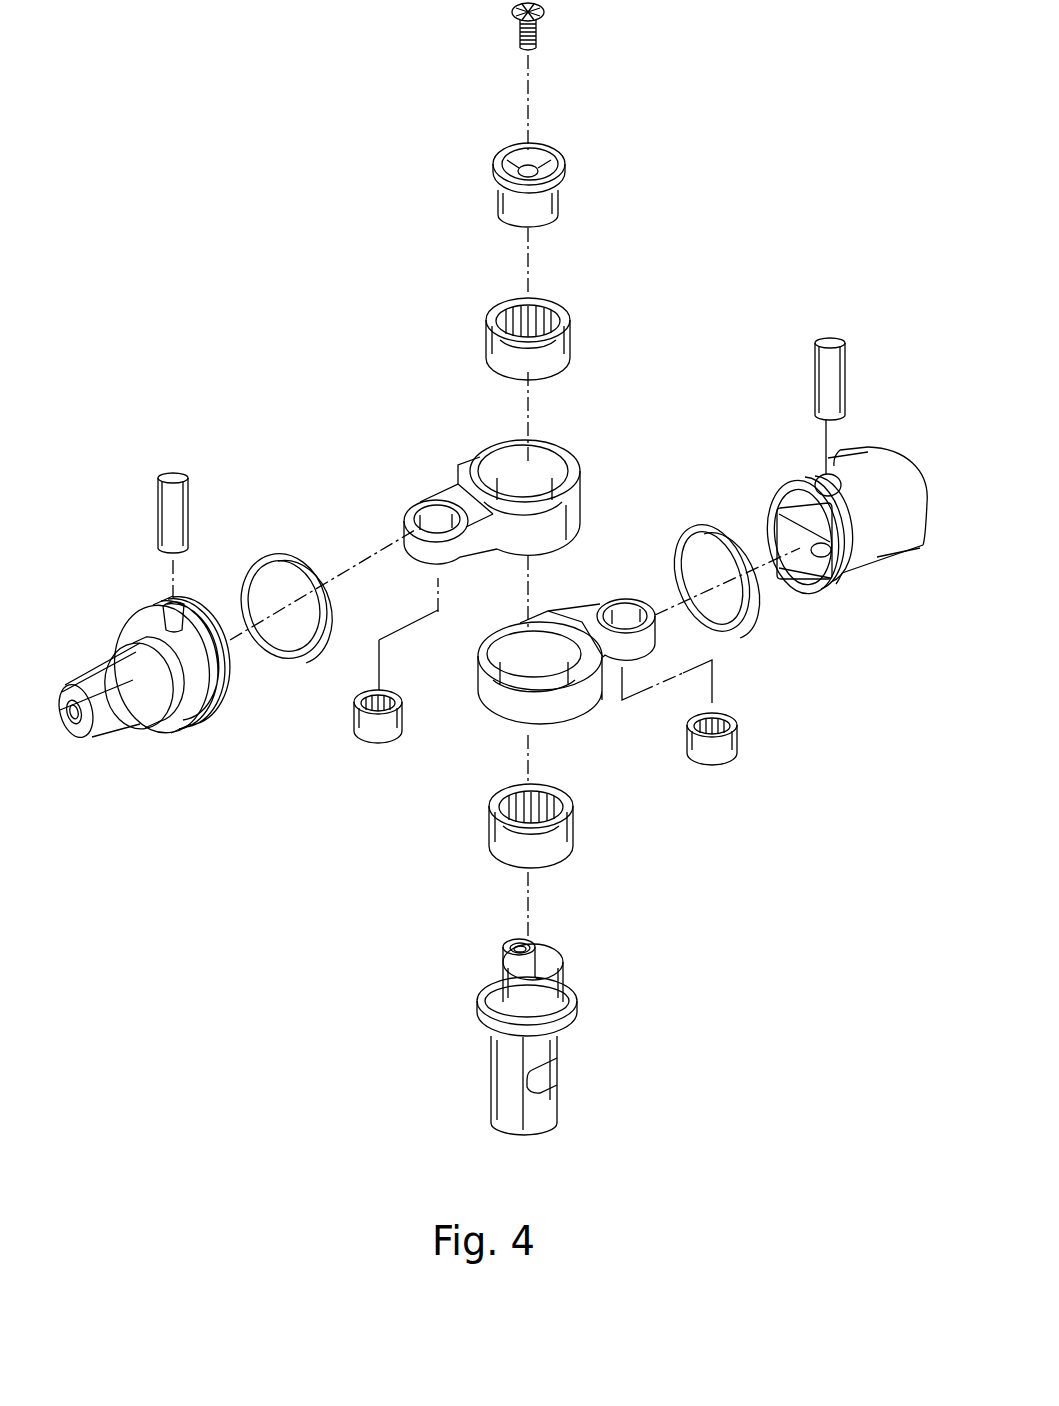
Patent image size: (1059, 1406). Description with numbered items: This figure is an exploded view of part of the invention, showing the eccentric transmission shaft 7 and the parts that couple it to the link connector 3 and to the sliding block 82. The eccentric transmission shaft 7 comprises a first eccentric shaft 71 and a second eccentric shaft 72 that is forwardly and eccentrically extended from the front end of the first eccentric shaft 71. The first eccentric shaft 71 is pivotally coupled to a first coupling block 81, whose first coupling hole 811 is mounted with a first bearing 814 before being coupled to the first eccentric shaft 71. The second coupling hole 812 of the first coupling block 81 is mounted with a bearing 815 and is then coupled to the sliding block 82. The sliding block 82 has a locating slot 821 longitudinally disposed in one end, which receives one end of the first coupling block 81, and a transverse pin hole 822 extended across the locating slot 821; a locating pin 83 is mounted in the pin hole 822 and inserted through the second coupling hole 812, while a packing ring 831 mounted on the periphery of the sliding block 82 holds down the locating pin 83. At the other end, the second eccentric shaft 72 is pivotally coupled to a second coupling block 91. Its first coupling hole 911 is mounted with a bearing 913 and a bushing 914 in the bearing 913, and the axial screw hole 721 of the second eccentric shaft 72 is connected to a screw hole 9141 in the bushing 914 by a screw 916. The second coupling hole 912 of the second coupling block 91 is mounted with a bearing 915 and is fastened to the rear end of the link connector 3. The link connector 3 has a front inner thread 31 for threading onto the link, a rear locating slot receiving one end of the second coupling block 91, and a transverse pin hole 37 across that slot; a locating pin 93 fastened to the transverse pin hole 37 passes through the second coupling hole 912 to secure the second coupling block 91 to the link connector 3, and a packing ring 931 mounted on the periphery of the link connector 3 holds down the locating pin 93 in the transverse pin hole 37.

The screw 916 is at (518, 30).
The screw hole 9141 is at (519, 168).
The bushing 914 is at (497, 200).
The bearing 913 is at (485, 318).
The first coupling hole 911 is at (510, 472).
The second coupling block 91 is at (498, 479).
The second coupling hole 912 is at (440, 512).
The packing ring 931 is at (274, 556).
The locating pin 93 is at (156, 502).
The transverse pin hole 37 is at (182, 622).
The front inner thread 31 is at (70, 724).
The link connector 3 is at (142, 669).
The bearing 915 is at (358, 725).
The first coupling hole 811 is at (523, 660).
The first coupling block 81 is at (551, 650).
The second coupling hole 812 is at (610, 622).
The packing ring 831 is at (697, 530).
The locating slot 821 is at (783, 520).
The transverse pin hole 822 is at (843, 480).
The sliding block 82 is at (819, 493).
The locating pin 83 is at (817, 365).
The bearing 815 is at (702, 748).
The first bearing 814 is at (492, 840).
The axial screw hole 721 is at (532, 940).
The second eccentric shaft 72 is at (518, 933).
The first eccentric shaft 71 is at (552, 992).
The eccentric transmission shaft 7 is at (531, 1011).